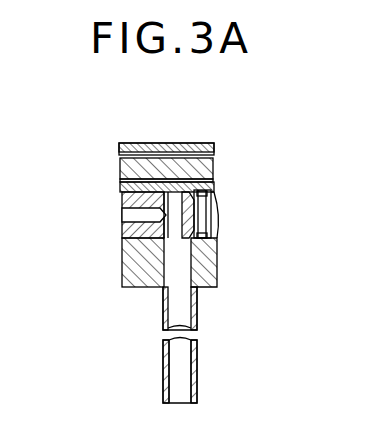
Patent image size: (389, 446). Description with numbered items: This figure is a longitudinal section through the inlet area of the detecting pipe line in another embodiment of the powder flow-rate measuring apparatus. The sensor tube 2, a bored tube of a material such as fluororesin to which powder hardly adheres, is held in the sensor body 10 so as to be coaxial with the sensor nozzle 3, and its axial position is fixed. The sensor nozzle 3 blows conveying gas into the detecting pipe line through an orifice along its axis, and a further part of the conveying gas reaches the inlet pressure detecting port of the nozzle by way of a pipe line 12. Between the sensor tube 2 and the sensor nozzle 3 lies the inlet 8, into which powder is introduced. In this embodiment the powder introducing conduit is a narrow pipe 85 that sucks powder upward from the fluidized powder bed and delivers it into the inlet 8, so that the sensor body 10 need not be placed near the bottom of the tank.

The sensor body 10 is at (146, 143).
The pipe line 12 is at (120, 178).
The inlet 8 is at (128, 193).
The sensor tube 2 is at (123, 236).
The sensor nozzle 3 is at (210, 212).
The narrow pipe 85 is at (163, 378).